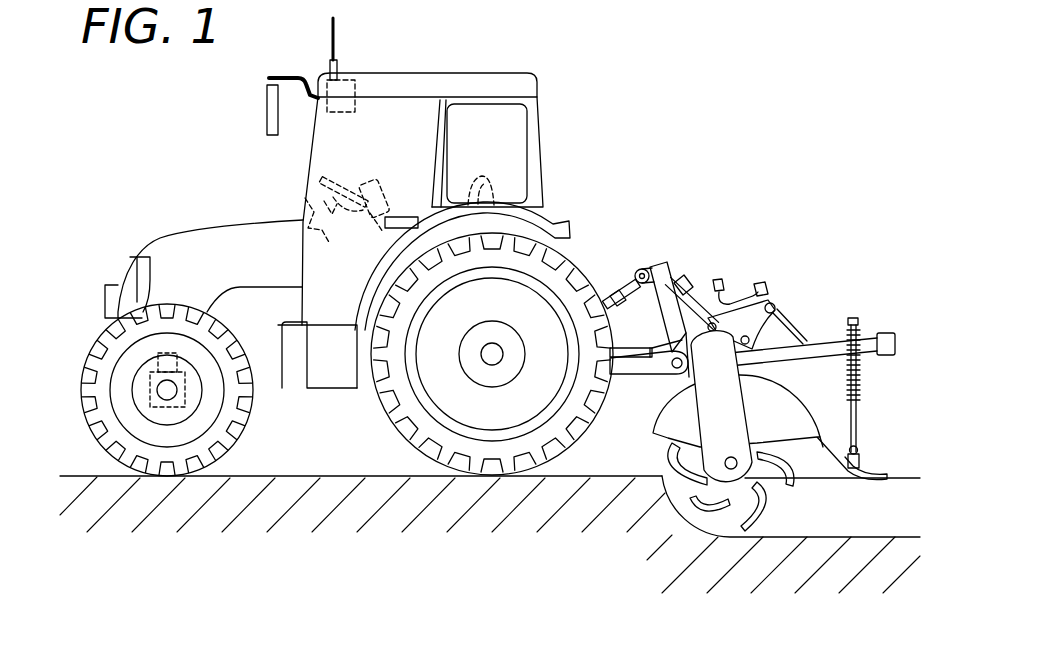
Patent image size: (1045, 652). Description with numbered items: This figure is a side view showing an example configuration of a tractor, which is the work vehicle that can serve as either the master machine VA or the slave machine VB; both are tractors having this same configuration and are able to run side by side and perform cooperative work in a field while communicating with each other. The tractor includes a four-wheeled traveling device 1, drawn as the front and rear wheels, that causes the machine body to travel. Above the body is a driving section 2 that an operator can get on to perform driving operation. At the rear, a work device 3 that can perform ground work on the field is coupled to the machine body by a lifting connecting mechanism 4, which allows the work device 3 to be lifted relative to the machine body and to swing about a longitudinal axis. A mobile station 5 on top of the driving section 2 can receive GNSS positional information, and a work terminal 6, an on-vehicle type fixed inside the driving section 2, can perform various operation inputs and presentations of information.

The traveling device 1 is at (245, 431).
The driving section 2 is at (492, 73).
The work device 3 is at (814, 307).
The lifting connecting mechanism 4 is at (657, 252).
The mobile station 5 is at (338, 60).
The work terminal 6 is at (370, 183).
The master machine VA is at (763, 117).
The slave machine VB is at (488, 294).